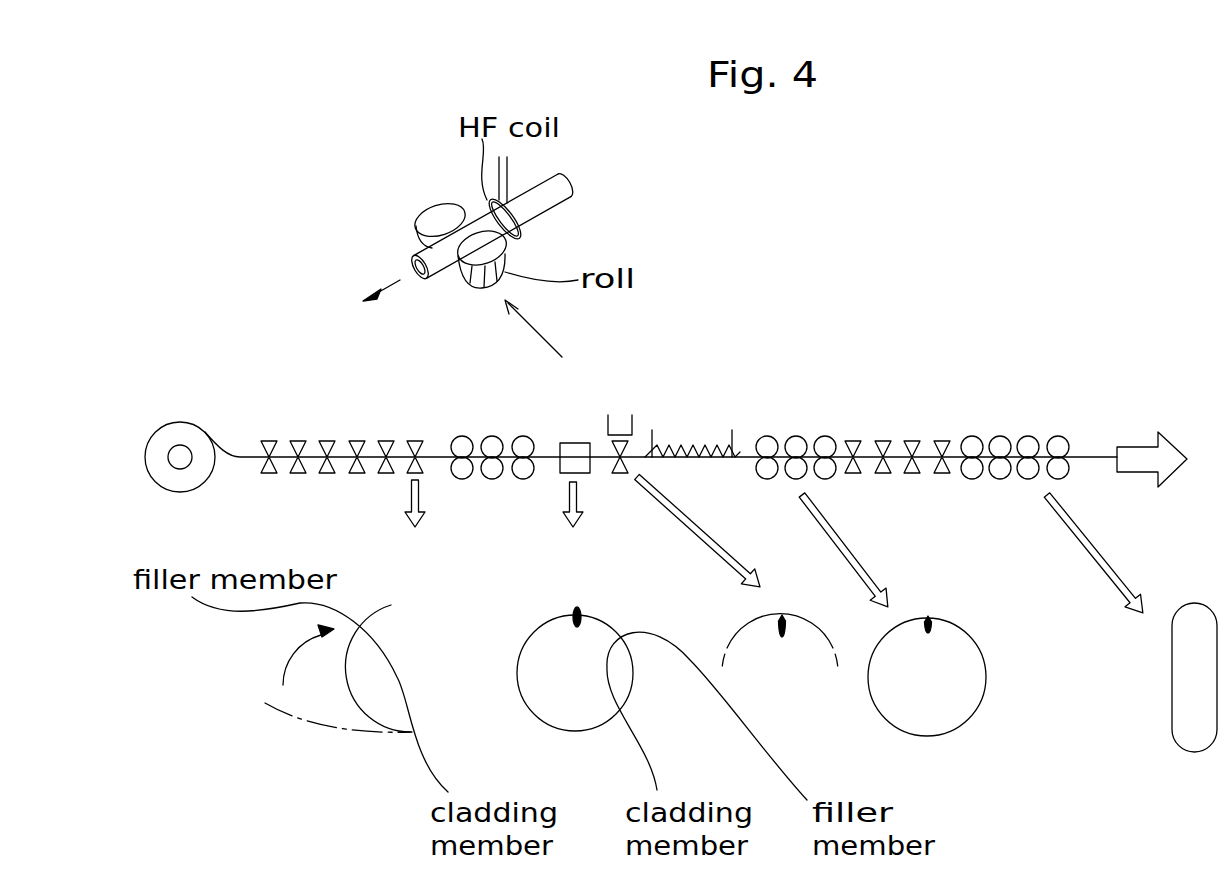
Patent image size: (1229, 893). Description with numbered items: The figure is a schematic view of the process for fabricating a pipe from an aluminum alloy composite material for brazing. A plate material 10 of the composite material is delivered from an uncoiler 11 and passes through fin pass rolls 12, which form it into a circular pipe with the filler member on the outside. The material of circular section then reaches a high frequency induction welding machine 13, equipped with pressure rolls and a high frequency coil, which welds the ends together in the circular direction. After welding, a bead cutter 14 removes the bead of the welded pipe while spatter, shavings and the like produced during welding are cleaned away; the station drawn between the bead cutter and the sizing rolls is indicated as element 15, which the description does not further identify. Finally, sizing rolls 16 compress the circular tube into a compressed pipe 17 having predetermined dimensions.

The plate material 10 is at (240, 457).
The uncoiler 11 is at (167, 422).
The fin pass rolls 12 is at (413, 442).
The high frequency induction welding machine 13 is at (573, 452).
The bead cutter 14 is at (622, 422).
The high-frequency welding unit 15 is at (710, 438).
The sizing rolls 16 is at (940, 443).
The compressed pipe 17 is at (1090, 457).